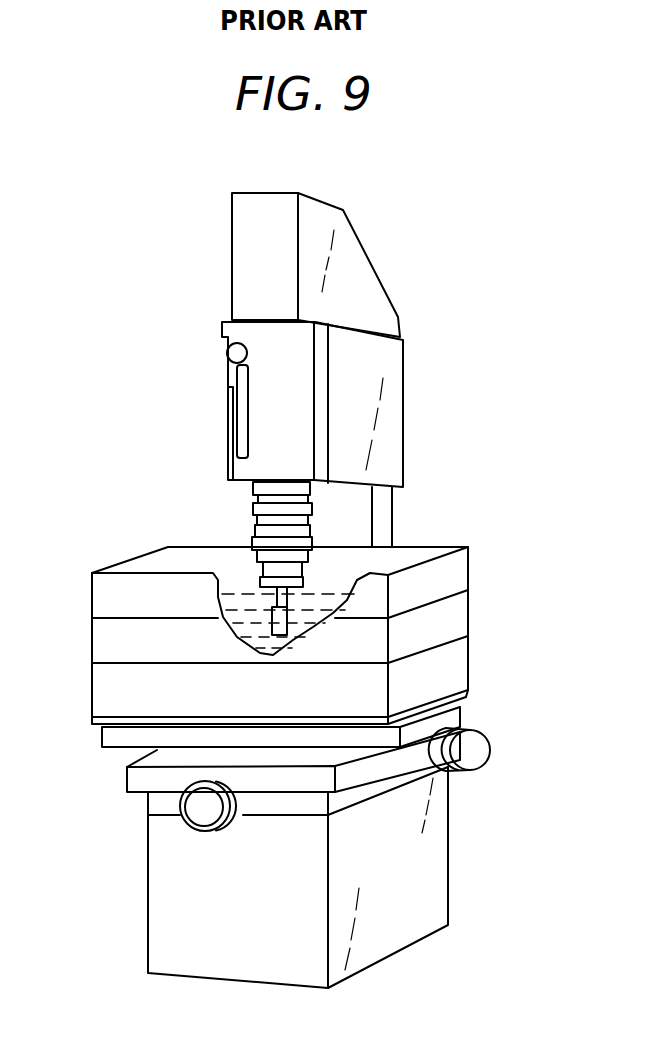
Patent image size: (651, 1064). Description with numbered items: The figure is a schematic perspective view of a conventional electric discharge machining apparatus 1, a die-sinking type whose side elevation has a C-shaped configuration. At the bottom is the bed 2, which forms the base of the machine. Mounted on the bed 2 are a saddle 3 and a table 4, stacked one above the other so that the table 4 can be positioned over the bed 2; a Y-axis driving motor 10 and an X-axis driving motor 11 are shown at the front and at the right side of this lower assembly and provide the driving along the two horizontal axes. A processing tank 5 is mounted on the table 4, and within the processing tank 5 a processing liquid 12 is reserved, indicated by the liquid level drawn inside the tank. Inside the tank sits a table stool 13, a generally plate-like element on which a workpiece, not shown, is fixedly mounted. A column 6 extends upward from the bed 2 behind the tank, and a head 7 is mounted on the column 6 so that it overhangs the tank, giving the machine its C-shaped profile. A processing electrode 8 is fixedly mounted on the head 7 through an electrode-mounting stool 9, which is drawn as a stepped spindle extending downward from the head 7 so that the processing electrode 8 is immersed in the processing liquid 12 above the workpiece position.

The electric discharge machining apparatus 1 is at (471, 271).
The bed 2 is at (450, 884).
The saddle 3 is at (404, 777).
The table 4 is at (128, 778).
The processing tank 5 is at (92, 665).
The column 6 is at (387, 511).
The head 7 is at (393, 297).
The processing electrode 8 is at (284, 622).
The electrode-mounting stool 9 is at (250, 535).
The Y-axis driving motor 10 is at (203, 831).
The X-axis driving motor 11 is at (476, 758).
The processing liquid 12 is at (226, 603).
The table stool 13 is at (105, 736).